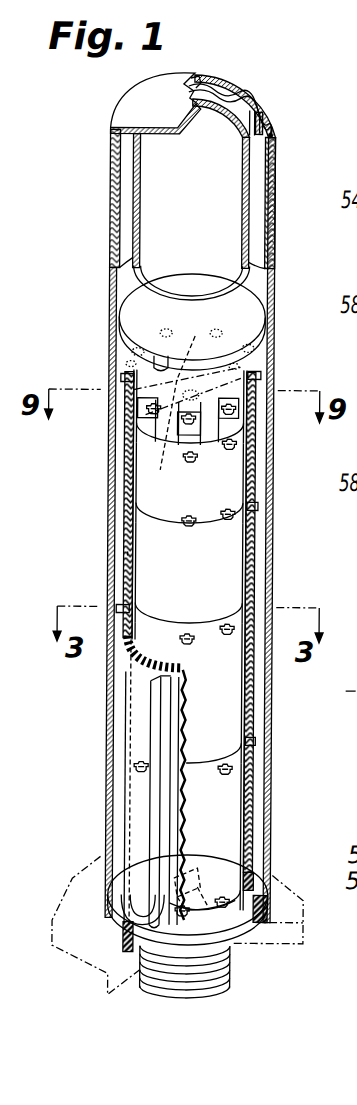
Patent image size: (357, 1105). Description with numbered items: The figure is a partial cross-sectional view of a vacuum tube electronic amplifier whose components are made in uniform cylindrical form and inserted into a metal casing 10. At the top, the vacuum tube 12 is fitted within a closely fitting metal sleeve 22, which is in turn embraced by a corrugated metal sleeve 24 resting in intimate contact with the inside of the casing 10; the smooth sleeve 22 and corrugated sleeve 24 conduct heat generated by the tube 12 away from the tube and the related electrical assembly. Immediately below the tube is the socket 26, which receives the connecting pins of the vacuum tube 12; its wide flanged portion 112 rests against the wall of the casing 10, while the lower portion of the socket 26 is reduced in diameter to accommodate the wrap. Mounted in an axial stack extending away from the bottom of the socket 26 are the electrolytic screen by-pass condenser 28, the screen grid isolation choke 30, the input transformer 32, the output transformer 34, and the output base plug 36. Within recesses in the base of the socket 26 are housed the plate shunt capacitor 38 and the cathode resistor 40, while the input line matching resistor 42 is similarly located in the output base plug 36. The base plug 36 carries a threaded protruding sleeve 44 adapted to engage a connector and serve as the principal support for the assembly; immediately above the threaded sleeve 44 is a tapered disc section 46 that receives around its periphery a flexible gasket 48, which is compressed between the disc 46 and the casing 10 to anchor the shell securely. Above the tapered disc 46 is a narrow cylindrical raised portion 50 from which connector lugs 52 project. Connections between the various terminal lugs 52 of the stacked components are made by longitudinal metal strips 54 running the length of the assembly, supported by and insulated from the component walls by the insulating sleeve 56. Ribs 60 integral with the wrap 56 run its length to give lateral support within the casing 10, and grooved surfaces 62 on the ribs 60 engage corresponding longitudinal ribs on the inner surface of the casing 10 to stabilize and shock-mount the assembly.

The metal casing 10 is at (108, 513).
The vacuum tube 12 is at (202, 248).
The metal sleeve 22 is at (247, 158).
The corrugated metal sleeve 24 is at (232, 90).
The socket 26 is at (237, 392).
The electrolytic screen by-pass condenser 28 is at (228, 481).
The screen grid isolation choke 30 is at (230, 560).
The input transformer 32 is at (228, 697).
The output transformer 34 is at (225, 797).
The output base plug 36 is at (236, 950).
The plate shunt capacitor 38 is at (164, 438).
The cathode resistor 40 is at (192, 355).
The input line matching resistor 42 is at (192, 873).
The threaded protruding sleeve 44 is at (217, 988).
The tapered disc section 46 is at (226, 937).
The flexible gasket 48 is at (262, 897).
The narrow cylindrical raised portion 50 is at (204, 903).
The connector lugs 52 is at (247, 380).
The metal strips 54 is at (124, 452).
The insulating sleeve 56 is at (128, 553).
The ribs 60 is at (162, 700).
The grooved surfaces 62 is at (158, 728).
The wide flanged portion 112 is at (257, 318).